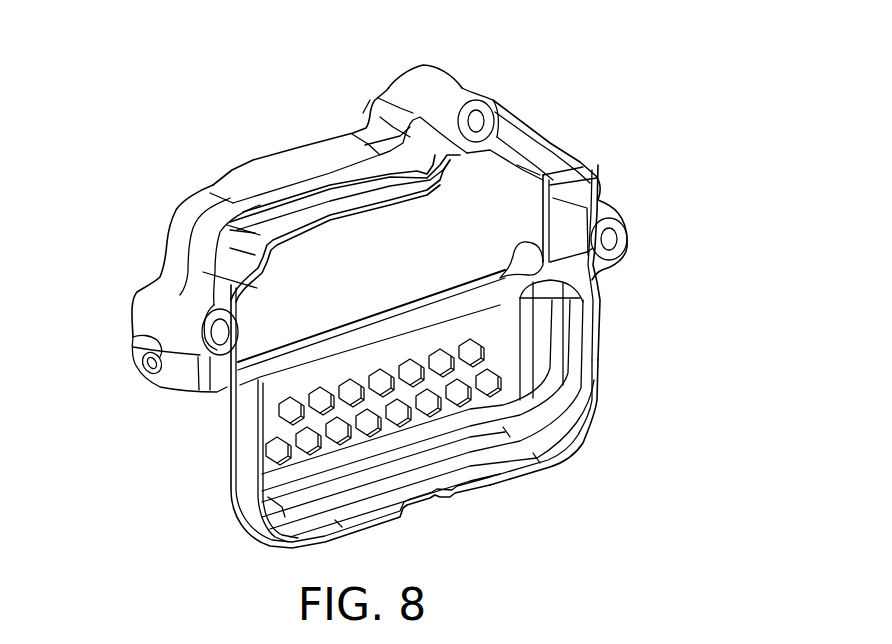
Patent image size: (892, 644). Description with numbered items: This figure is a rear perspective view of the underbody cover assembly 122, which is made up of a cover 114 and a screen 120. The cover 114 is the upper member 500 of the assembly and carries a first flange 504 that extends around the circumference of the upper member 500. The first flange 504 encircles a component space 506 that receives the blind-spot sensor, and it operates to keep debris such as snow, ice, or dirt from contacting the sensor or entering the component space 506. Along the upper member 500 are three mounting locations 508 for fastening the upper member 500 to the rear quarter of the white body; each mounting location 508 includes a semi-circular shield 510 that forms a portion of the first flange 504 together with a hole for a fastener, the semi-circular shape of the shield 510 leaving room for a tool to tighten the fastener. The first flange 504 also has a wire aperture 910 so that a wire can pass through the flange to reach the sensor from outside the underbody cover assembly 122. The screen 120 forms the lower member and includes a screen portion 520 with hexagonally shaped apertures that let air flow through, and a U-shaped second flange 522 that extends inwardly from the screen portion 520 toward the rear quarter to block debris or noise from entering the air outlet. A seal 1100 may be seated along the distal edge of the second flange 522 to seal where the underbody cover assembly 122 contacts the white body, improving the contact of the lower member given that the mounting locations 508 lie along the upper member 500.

The underbody cover assembly 122 is at (517, 96).
The upper member 500 is at (190, 223).
The first flange 504 is at (275, 168).
The component space 506 is at (383, 261).
The mounting locations 508 is at (475, 113).
The semi-circular shield 510 is at (425, 82).
The cover 114 is at (572, 187).
The screen 120 is at (497, 400).
The seal 1100 is at (597, 413).
The second flange 522 is at (340, 518).
The screen portion 520 is at (313, 360).
The wire aperture 910 is at (152, 382).